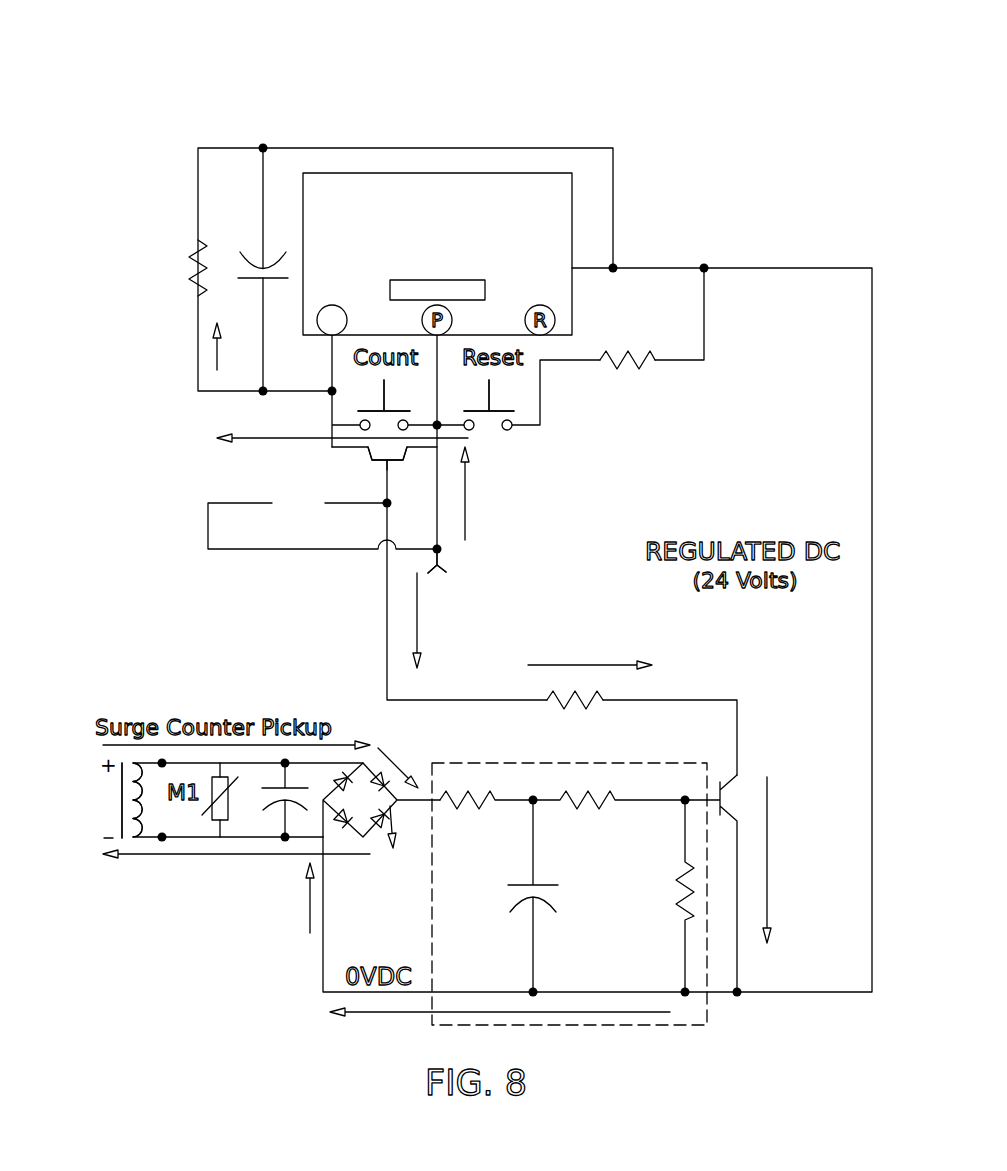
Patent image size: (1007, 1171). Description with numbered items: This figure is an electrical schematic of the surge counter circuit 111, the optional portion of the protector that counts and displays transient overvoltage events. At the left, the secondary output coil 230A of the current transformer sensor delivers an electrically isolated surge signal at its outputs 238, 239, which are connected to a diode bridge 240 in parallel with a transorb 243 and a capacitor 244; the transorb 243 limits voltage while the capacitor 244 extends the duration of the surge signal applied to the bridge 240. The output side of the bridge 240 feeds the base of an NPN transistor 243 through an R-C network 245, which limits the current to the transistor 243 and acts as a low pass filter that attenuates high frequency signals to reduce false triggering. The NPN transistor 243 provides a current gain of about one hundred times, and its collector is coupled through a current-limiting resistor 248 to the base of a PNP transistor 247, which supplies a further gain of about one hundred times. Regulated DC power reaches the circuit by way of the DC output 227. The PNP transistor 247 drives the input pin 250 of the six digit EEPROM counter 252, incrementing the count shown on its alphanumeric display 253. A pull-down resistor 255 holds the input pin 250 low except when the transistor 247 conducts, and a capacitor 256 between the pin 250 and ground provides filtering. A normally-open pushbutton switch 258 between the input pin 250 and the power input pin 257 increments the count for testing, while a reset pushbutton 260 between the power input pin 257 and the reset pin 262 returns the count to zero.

The surge counter circuit 111 is at (155, 128).
The input pin 250 is at (332, 305).
The six digit EEPROM integrated counter 252 is at (572, 210).
The alphanumeric display 253 is at (437, 290).
The pull-down resistor 255 is at (196, 272).
The capacitor 256 is at (263, 250).
The power input pin 257 is at (450, 322).
The reset pin 262 is at (556, 320).
The normally-open pushbutton switch 258 is at (362, 403).
The reset pushbutton 260 is at (490, 428).
The PNP transistor 247 is at (370, 455).
The DC output 227 is at (637, 562).
The current-limiting resistor 248 is at (600, 692).
The output of coil 238 is at (160, 760).
The output coil 230A is at (122, 800).
The output of coil 239 is at (162, 840).
The transorb / NPN transistor 243 is at (212, 822).
The capacitor 244 is at (300, 788).
The diode bridge 240 is at (395, 806).
The R-C network 245 is at (615, 763).